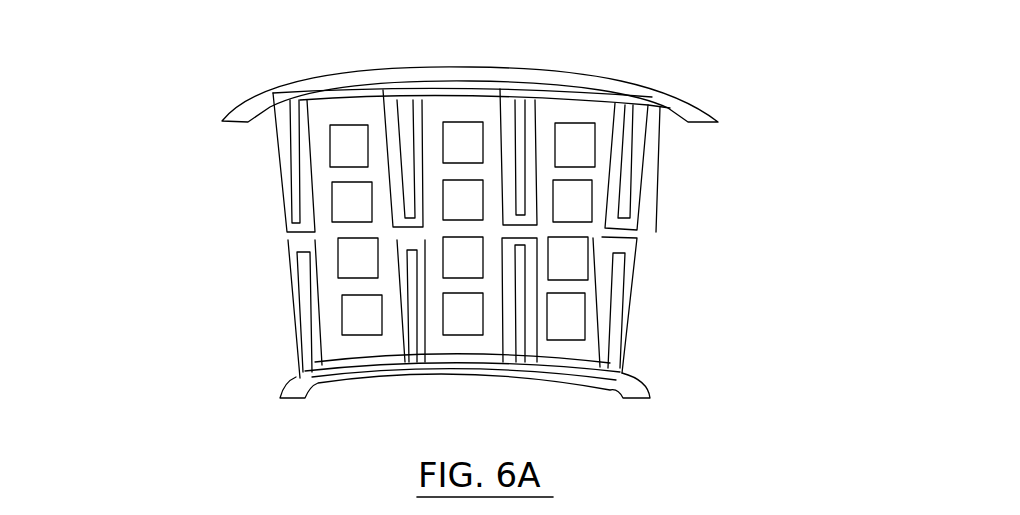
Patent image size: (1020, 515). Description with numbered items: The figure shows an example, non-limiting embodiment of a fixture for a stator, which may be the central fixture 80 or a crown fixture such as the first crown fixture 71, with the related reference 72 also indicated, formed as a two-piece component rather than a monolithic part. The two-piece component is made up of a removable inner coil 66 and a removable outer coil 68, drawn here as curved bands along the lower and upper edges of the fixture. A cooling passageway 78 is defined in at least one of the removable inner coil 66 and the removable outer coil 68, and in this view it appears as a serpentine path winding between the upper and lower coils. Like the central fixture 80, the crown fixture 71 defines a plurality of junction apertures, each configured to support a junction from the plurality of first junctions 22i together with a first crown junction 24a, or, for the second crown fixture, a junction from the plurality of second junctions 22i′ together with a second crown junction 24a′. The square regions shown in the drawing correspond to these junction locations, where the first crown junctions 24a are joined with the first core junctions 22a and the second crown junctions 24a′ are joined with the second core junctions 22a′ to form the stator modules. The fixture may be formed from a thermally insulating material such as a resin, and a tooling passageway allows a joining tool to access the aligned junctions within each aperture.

The first crown fixture 71 is at (704, 85).
The sensor 72 is at (712, 81).
The central fixture 80 is at (712, 81).
The removable outer coil 68 is at (572, 78).
The removable inner coil 66 is at (632, 385).
The cooling passageway 78 is at (357, 92).
The first core junctions 22a is at (470, 193).
The second core junctions 22a′ is at (568, 262).
The first junctions 22i is at (350, 210).
The second junctions 22i′ is at (352, 257).
The first crown junctions 24a is at (318, 184).
The second crown junctions 24a′ is at (578, 147).